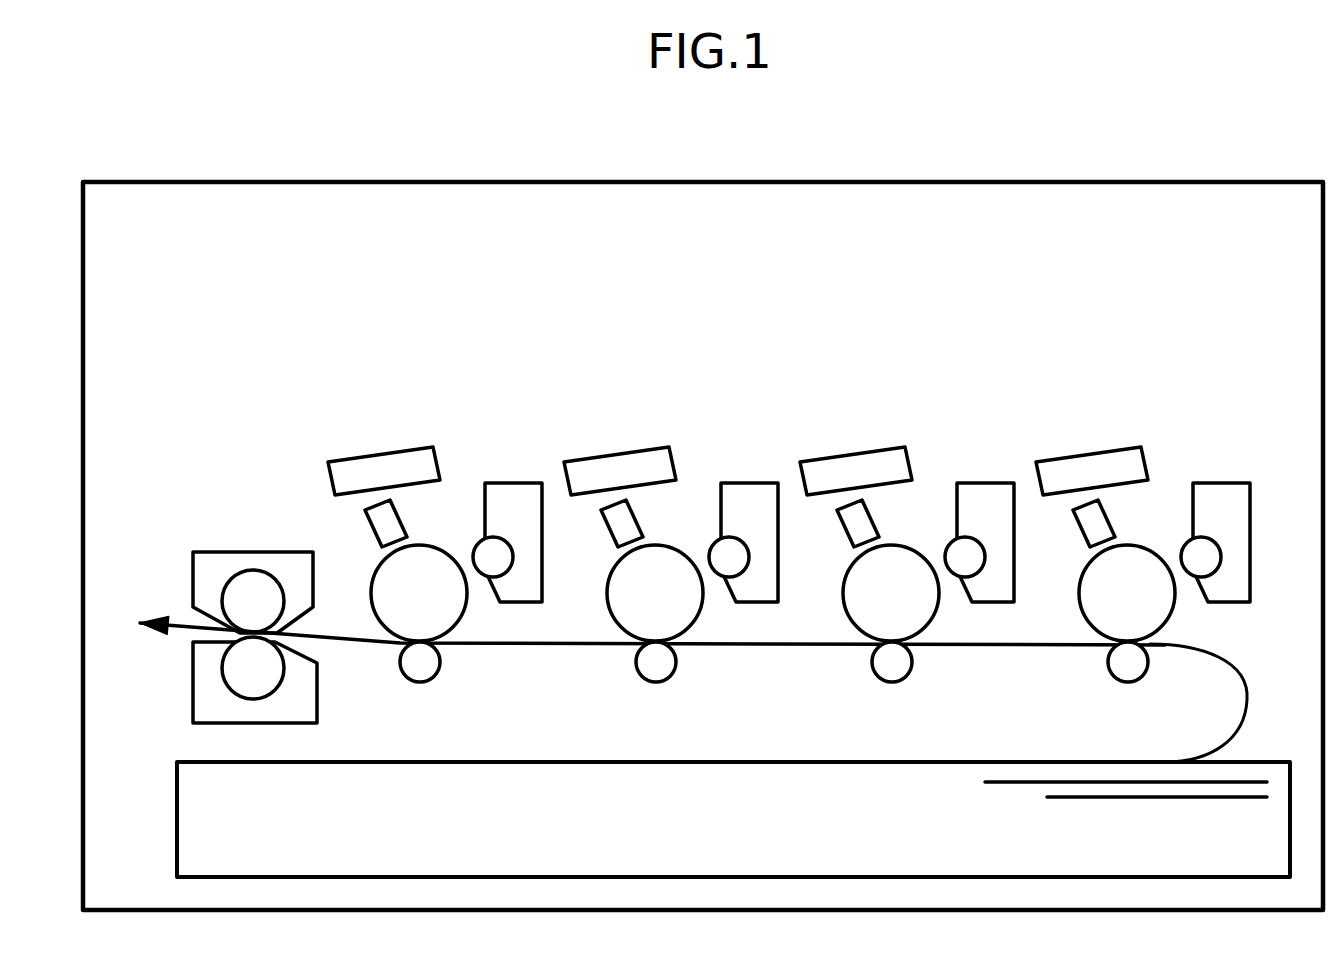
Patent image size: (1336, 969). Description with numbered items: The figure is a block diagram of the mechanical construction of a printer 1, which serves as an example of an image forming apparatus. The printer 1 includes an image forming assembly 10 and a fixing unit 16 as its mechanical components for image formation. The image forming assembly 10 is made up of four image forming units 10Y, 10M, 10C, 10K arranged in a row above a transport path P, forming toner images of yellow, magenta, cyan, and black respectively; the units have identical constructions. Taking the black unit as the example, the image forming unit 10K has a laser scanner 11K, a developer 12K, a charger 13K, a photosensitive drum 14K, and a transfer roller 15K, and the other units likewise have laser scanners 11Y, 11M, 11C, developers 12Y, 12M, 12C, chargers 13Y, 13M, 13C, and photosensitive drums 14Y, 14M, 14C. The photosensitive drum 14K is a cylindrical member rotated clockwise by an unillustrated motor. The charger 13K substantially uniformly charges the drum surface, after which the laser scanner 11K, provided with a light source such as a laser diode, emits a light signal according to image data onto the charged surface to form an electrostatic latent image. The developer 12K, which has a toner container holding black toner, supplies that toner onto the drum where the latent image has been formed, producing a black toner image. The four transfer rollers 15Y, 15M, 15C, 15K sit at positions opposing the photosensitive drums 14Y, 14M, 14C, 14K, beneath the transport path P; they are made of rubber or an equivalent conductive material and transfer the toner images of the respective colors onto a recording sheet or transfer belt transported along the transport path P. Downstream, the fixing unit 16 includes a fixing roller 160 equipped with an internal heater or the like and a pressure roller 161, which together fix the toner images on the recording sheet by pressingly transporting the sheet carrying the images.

The printer 1 is at (1243, 143).
The image forming assembly 10 is at (800, 307).
The image forming unit 10Y is at (392, 418).
The image forming unit 10M is at (650, 509).
The image forming unit 10C is at (886, 509).
The image forming unit 10K is at (1130, 509).
The laser scanner 11Y is at (377, 450).
The laser scanner 11M is at (618, 423).
The laser scanner 11C is at (856, 423).
The laser scanner 11K is at (1092, 423).
The developer 12Y is at (497, 485).
The developer 12M is at (743, 477).
The developer 12C is at (979, 477).
The developer 12K is at (1222, 477).
The charger 13Y is at (393, 513).
The charger 13M is at (660, 473).
The charger 13C is at (897, 473).
The charger 13K is at (1135, 473).
The photosensitive drum 14Y is at (370, 573).
The photosensitive drum 14M is at (613, 520).
The photosensitive drum 14C is at (848, 520).
The photosensitive drum 14K is at (1086, 520).
The transfer roller 15Y is at (437, 648).
The transfer roller 15M is at (618, 674).
The transfer roller 15C is at (854, 674).
The transfer roller 15K is at (1091, 674).
The fixing unit 16 is at (233, 552).
The fixing roller 160 is at (223, 587).
The pressure roller 161 is at (223, 680).
The transport path P is at (1207, 648).